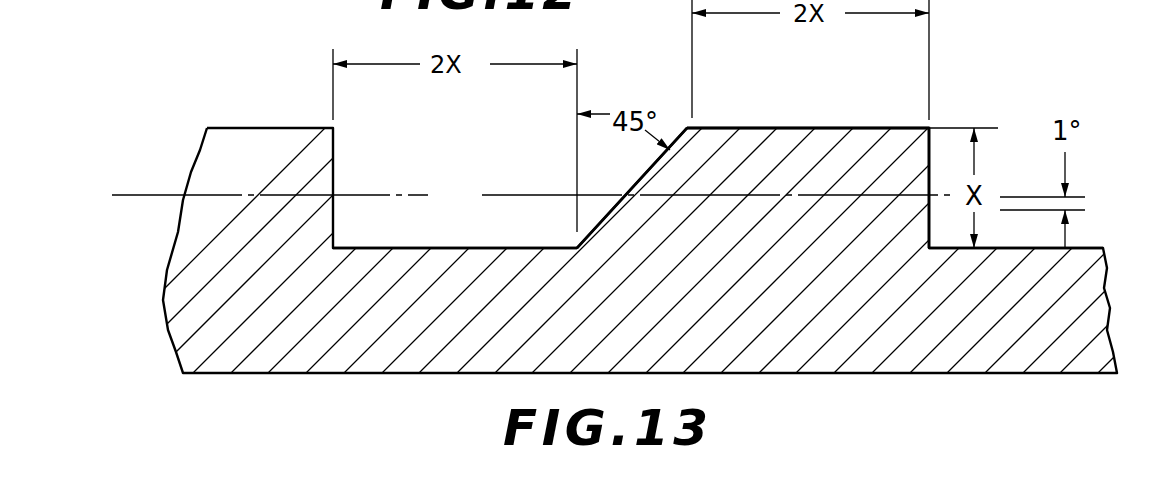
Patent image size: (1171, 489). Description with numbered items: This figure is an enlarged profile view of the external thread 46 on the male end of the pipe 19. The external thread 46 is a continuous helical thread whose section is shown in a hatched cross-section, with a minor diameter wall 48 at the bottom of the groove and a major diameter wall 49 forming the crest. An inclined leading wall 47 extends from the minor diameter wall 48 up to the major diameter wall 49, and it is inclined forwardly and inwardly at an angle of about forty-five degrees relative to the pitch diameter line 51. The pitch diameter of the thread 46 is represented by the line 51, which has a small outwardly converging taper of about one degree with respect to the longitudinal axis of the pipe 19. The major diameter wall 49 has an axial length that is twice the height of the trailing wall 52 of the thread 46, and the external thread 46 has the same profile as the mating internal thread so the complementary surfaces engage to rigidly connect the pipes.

The pipe 19 is at (318, 347).
The external thread 46 is at (846, 158).
The inclined leading wall 47 is at (681, 134).
The minor diameter wall 48 is at (453, 247).
The major diameter wall 49 is at (755, 127).
The pitch diameter line 51 is at (140, 193).
The trailing wall 52 is at (931, 150).